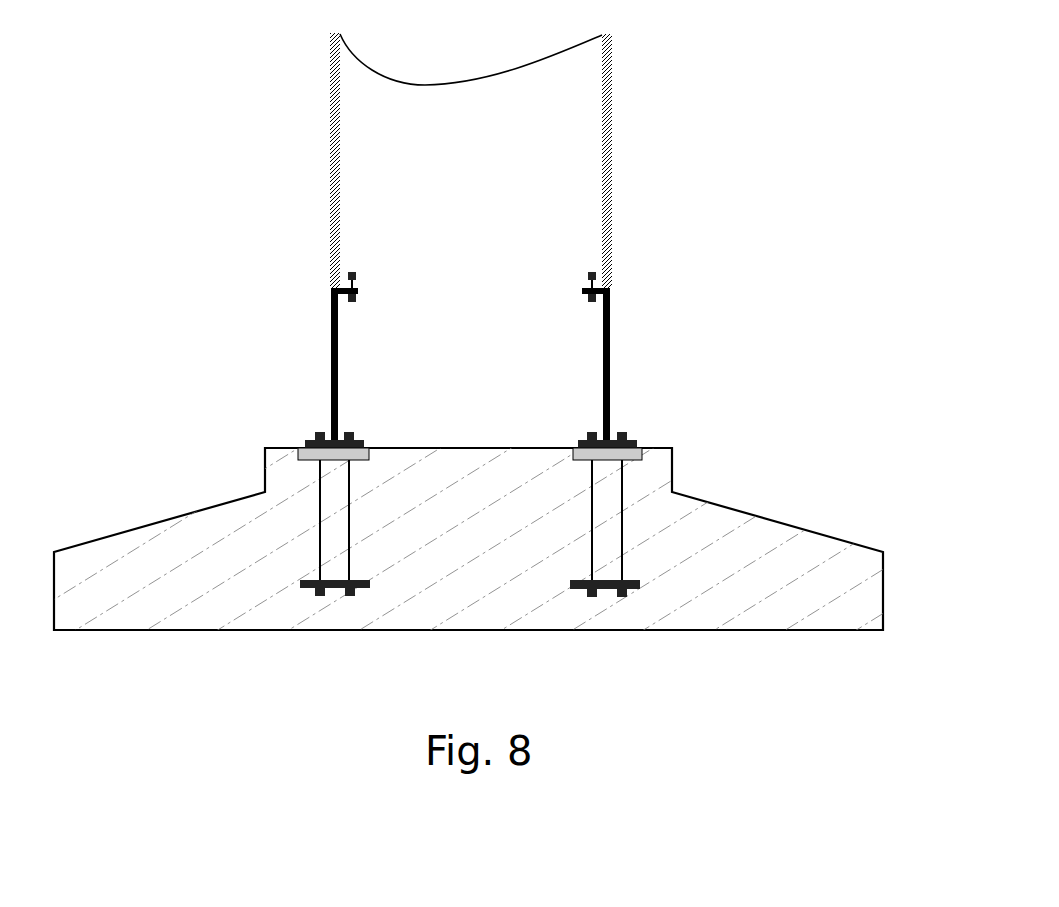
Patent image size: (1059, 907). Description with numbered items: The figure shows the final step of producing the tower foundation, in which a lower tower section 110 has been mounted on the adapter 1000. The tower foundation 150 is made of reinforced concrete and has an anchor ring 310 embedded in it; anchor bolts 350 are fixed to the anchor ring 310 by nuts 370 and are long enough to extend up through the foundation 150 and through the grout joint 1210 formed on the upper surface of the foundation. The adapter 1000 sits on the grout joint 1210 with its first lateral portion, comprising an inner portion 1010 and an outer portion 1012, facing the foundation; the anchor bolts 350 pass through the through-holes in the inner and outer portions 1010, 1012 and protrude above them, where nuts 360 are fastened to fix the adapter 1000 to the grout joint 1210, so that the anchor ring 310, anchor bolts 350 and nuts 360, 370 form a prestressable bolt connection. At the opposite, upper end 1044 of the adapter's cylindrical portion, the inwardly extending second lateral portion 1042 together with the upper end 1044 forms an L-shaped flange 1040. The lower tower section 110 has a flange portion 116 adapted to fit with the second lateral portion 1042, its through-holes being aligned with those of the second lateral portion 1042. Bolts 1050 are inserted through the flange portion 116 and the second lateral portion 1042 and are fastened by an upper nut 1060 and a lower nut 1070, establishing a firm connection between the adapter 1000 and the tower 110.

The lower tower section 110 is at (612, 148).
The flange portion 116 is at (622, 280).
The adapter 1000 is at (611, 330).
The inner portion of first lateral portion 1010 is at (669, 356).
The L-shaped flange 1040 is at (348, 326).
The upper end of cylindrical portion 1044 is at (334, 307).
The second lateral portion 1042 is at (360, 291).
The bolts 1050 is at (357, 283).
The upper nut 1060 is at (353, 272).
The lower nut 1070 is at (356, 301).
The outer portion of first lateral portion 1012 is at (304, 440).
The grout joint 1210 is at (570, 448).
The nuts 360 is at (589, 432).
The anchor bolts 350 is at (320, 508).
The anchor ring 310 is at (640, 580).
The tower foundation 150 is at (765, 545).
The nuts 370 is at (624, 598).